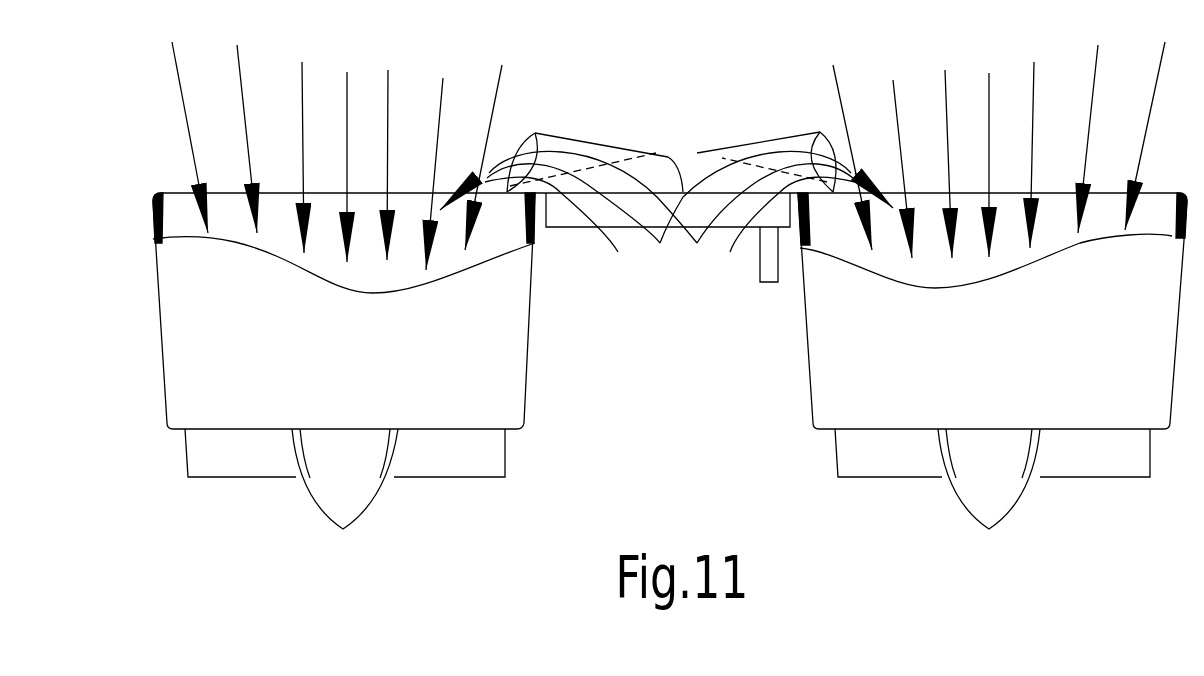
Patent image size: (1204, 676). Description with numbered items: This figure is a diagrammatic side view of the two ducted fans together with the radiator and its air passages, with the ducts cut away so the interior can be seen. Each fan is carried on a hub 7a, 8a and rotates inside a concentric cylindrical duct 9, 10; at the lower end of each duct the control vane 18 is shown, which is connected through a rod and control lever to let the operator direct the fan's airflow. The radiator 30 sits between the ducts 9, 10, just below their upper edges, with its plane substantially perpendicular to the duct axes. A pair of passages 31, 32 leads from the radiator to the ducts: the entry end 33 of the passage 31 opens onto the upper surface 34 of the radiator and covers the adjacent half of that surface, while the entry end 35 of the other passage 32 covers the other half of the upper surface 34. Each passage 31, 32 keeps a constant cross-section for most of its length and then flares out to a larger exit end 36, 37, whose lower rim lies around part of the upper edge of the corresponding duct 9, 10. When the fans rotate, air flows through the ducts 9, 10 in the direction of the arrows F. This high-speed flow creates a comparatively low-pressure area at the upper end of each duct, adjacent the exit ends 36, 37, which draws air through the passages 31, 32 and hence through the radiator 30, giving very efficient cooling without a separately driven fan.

The hub 7a is at (357, 503).
The hub 8a is at (992, 490).
The duct 9 is at (344, 311).
The duct 10 is at (992, 311).
The control vane 18 is at (475, 464).
The radiator 30 is at (570, 228).
The passage 31 is at (581, 137).
The passage 32 is at (772, 137).
The entry end 33 is at (636, 195).
The upper surface 34 is at (665, 192).
The entry end 35 is at (743, 195).
The exit end 36 is at (523, 135).
The exit end 37 is at (825, 133).
The arrows F is at (668, 139).